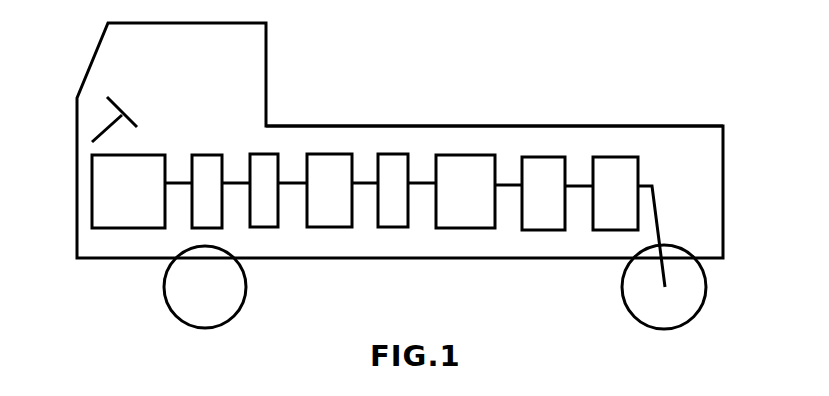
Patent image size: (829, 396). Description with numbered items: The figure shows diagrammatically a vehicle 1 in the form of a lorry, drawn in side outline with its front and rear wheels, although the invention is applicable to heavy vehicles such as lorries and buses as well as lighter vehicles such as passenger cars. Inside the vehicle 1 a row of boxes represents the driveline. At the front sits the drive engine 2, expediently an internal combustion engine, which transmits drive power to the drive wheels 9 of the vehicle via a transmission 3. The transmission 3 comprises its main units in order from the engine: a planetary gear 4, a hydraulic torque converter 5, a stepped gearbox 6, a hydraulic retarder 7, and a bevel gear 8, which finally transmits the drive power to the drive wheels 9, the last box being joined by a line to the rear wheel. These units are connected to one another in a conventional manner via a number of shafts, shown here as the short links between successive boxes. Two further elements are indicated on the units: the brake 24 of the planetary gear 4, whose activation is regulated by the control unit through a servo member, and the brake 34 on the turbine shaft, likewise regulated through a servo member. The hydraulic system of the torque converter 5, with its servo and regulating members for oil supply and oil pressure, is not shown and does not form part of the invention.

The vehicle 1 is at (88, 62).
The drive engine 2 is at (142, 191).
The transmission 3 is at (463, 123).
The planetary gear 4 is at (205, 172).
The hydraulic torque converter 5 is at (342, 190).
The stepped gearbox 6 is at (479, 191).
The hydraulic retarder 7 is at (557, 193).
The bevel gear 8 is at (629, 222).
The drive wheels 9 is at (623, 300).
The brake of the planetary gear 24 is at (265, 217).
The brake on the turbine shaft 34 is at (394, 170).